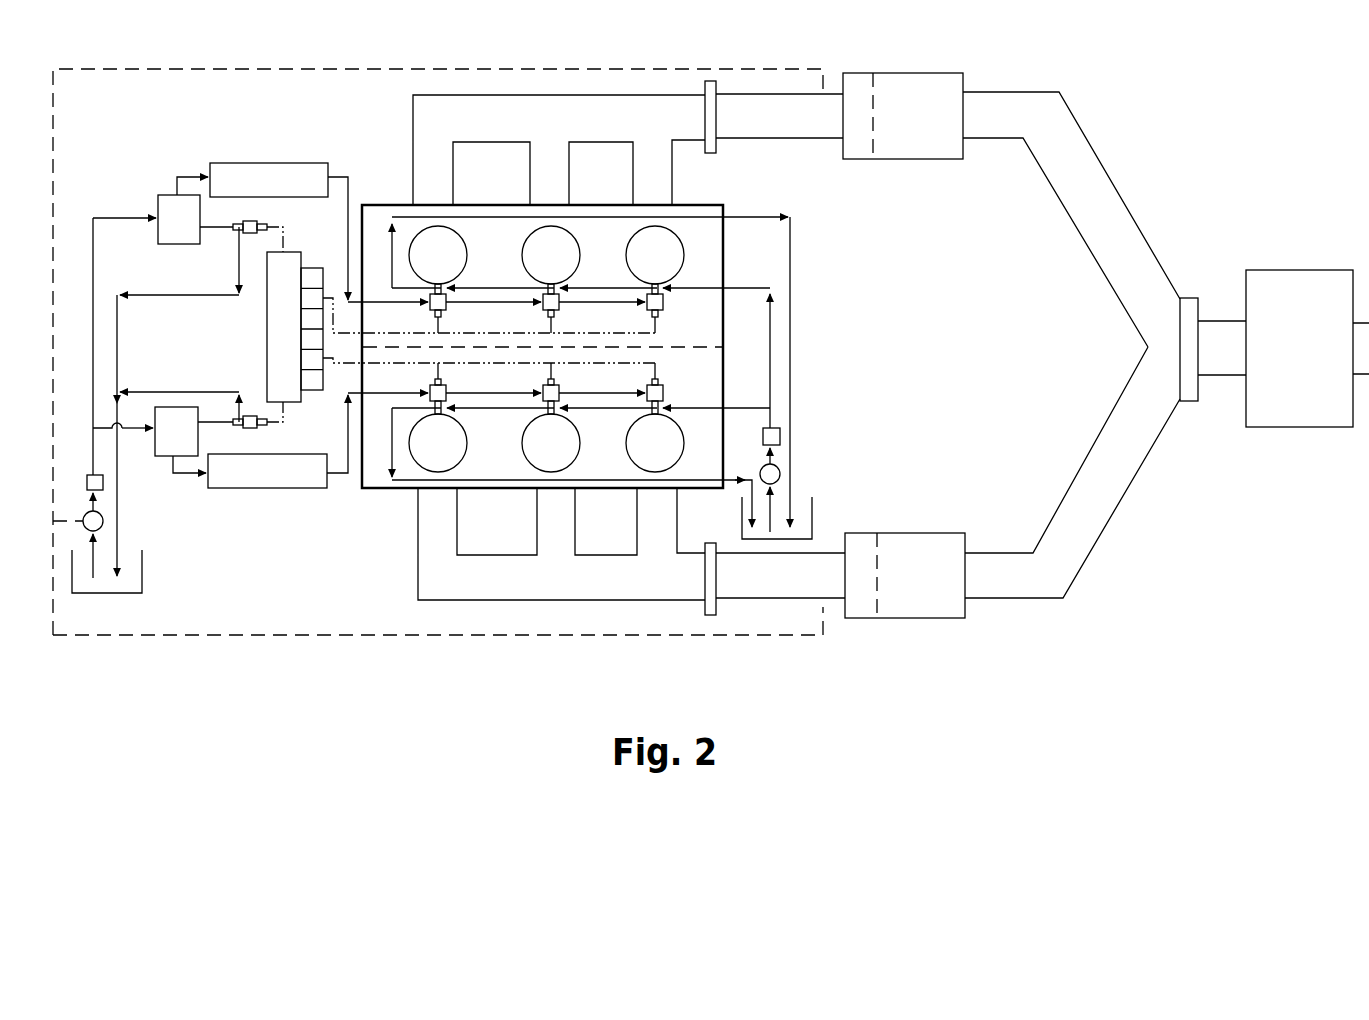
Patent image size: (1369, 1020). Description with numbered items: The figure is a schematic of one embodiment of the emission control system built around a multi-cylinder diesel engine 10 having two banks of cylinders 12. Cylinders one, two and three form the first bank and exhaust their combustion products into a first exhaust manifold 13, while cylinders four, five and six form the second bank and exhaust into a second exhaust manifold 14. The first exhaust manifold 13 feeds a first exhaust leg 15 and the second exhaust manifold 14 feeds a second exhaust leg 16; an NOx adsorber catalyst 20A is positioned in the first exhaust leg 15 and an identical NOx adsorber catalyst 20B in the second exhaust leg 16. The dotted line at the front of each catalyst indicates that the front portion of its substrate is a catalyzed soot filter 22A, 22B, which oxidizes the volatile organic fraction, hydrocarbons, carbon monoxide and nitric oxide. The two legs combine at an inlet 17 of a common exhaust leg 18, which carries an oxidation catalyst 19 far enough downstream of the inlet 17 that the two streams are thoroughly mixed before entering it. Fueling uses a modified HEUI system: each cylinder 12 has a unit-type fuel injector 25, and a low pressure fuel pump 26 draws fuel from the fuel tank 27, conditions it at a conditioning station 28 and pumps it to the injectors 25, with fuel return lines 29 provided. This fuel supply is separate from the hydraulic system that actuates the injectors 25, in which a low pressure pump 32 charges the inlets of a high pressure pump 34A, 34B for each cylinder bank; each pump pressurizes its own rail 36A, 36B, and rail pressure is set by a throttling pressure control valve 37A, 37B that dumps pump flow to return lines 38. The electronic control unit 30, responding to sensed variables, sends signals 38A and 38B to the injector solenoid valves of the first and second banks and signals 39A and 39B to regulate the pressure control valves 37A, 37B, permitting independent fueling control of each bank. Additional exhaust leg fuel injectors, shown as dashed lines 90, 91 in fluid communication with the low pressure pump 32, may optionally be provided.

The multi-cylinder diesel engine 10 is at (599, 261).
The cylinders 12 is at (653, 220).
The first exhaust manifold 13 is at (548, 600).
The second exhaust manifold 14 is at (521, 95).
The first exhaust leg 15 is at (1012, 598).
The second exhaust leg 16 is at (812, 94).
The inlet 17 is at (1196, 297).
The common exhaust leg 18 is at (1233, 375).
The oxidation catalyst 19 is at (1322, 427).
The NOx adsorber catalyst 20A is at (927, 618).
The NOx adsorber catalyst 20B is at (903, 73).
The catalyzed soot filter 22A is at (867, 623).
The catalyzed soot filter 22B is at (862, 70).
The fuel injector 25 is at (665, 300).
The low pressure fuel pump 26 is at (783, 468).
The fuel tank 27 is at (813, 522).
The conditioning station 28 is at (782, 437).
The fuel return lines 29 is at (792, 337).
The electronic control unit 30 is at (267, 335).
The low pressure pump 32 is at (101, 517).
The high pressure pump 34A is at (160, 458).
The high pressure pump 34B is at (167, 193).
The rail 36A is at (270, 488).
The rail 36B is at (273, 163).
The pressure control valve 37A is at (267, 423).
The pressure control valve 37B is at (263, 225).
The return lines 38 is at (147, 390).
The control signals 38A is at (398, 363).
The control signals 38B is at (417, 330).
The control signals 39A is at (266, 420).
The control signals 39B is at (260, 232).
The exhaust leg fuel injector 90 is at (368, 636).
The exhaust leg fuel injector 91 is at (360, 66).